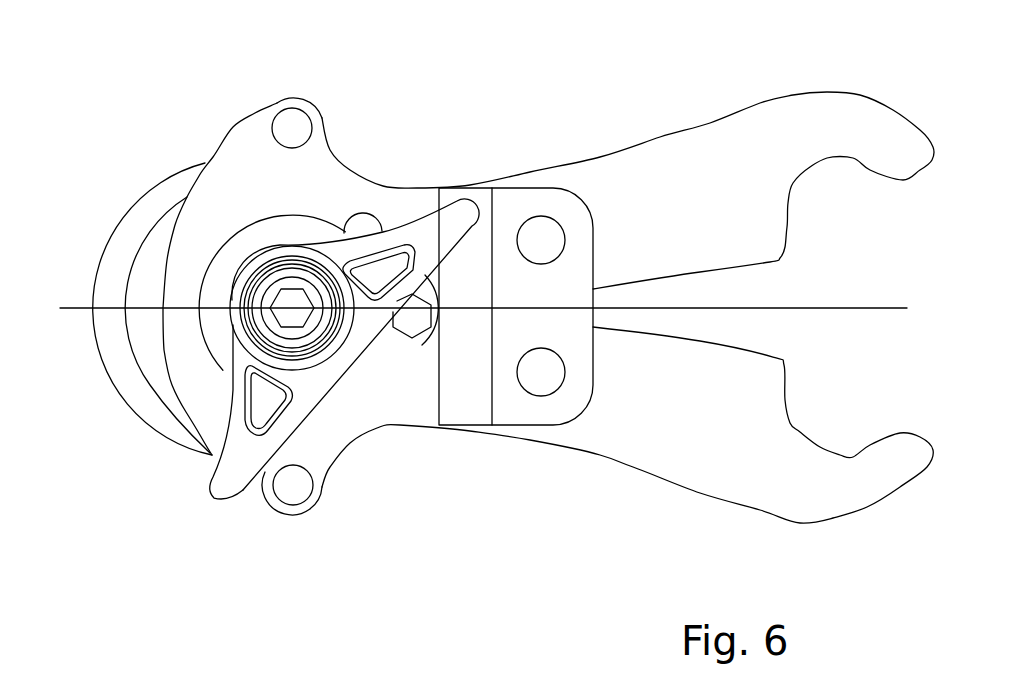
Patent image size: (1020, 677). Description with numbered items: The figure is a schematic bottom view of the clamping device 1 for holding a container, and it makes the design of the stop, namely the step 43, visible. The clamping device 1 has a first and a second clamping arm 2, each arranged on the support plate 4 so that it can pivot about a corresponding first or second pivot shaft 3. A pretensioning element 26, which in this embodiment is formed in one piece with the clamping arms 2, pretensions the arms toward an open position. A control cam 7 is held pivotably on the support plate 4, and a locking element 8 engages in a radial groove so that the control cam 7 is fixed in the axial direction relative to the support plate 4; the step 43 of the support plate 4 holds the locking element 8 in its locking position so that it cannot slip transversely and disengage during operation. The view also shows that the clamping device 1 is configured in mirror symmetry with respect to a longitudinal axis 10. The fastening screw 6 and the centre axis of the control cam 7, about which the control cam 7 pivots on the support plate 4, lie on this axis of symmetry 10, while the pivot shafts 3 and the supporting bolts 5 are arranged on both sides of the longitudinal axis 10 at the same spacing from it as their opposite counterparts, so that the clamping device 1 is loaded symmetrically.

The clamping device 1 is at (135, 76).
The clamping arm 2 is at (719, 157).
The pivot shaft 3 is at (541, 236).
The support plate 4 is at (375, 413).
The supporting bolt 5 is at (292, 132).
The fastening screw 6 is at (396, 328).
The control cam 7 is at (216, 487).
The locking element 8 is at (419, 333).
The longitudinal axis 10 is at (68, 306).
The pretensioning element 26 is at (130, 380).
The step 43 is at (426, 200).